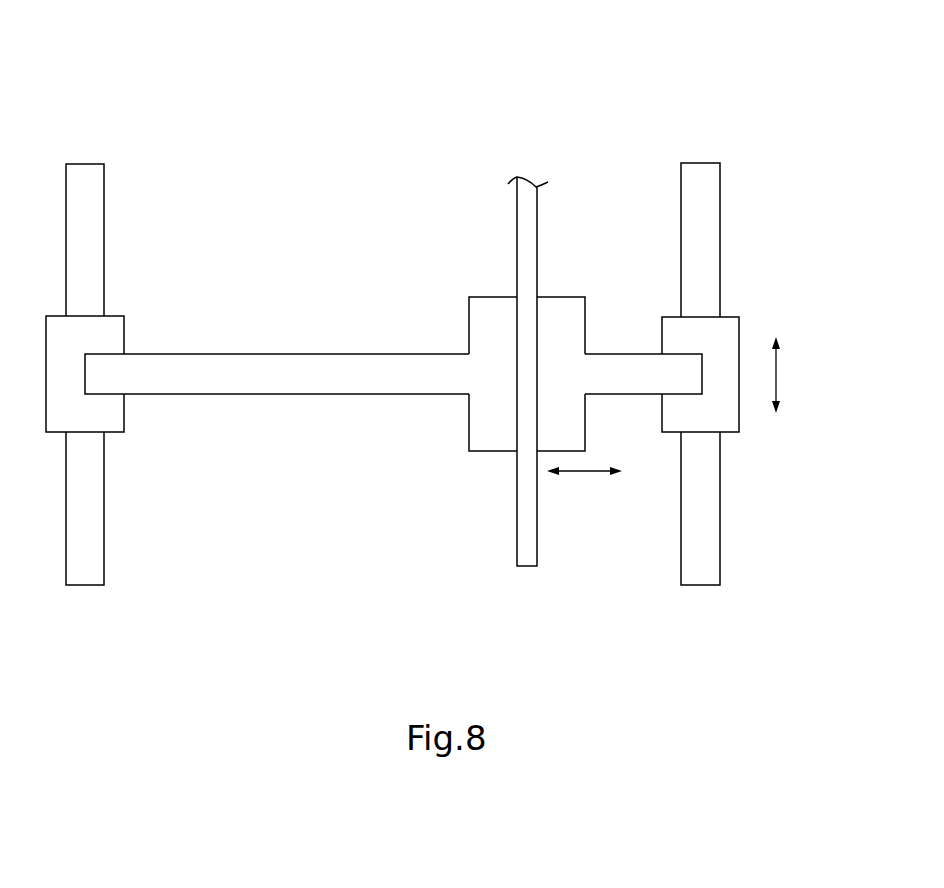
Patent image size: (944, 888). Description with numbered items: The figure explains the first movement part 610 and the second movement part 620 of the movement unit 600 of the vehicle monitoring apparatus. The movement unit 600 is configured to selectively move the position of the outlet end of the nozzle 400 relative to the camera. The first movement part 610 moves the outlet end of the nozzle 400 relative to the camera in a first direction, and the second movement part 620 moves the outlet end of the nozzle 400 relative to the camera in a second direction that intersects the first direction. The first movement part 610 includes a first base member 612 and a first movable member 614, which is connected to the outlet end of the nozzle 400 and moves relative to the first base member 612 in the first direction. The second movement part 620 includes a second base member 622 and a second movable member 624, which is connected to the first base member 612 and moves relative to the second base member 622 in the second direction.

The movement unit 600 is at (209, 86).
The first movement part 610 is at (408, 288).
The first base member 612 is at (332, 354).
The first movable member 614 is at (468, 302).
The second movement part 620 is at (804, 273).
The second base member 622 is at (720, 283).
The second movable member 624 is at (727, 316).
The nozzle 400 is at (516, 527).